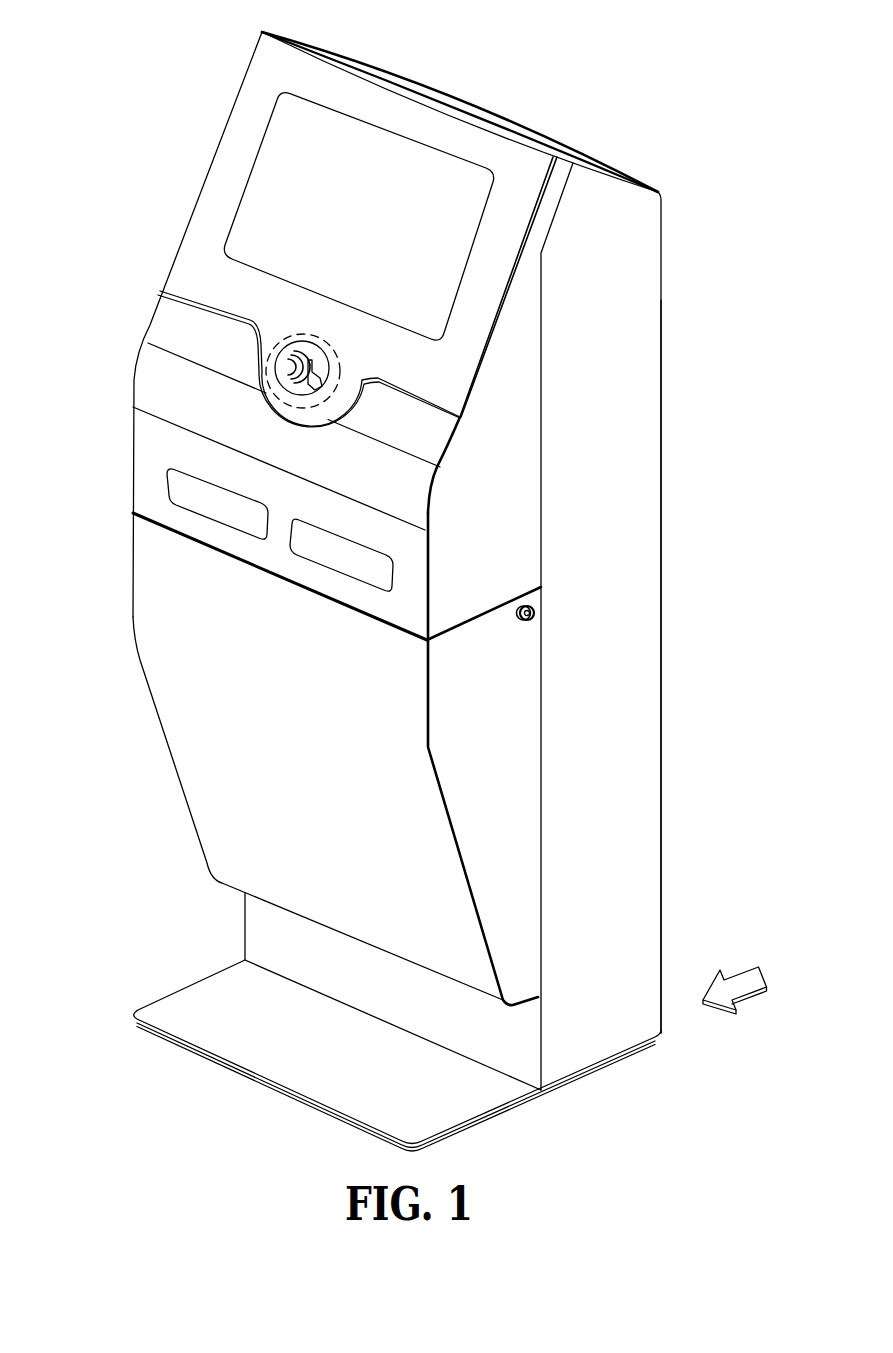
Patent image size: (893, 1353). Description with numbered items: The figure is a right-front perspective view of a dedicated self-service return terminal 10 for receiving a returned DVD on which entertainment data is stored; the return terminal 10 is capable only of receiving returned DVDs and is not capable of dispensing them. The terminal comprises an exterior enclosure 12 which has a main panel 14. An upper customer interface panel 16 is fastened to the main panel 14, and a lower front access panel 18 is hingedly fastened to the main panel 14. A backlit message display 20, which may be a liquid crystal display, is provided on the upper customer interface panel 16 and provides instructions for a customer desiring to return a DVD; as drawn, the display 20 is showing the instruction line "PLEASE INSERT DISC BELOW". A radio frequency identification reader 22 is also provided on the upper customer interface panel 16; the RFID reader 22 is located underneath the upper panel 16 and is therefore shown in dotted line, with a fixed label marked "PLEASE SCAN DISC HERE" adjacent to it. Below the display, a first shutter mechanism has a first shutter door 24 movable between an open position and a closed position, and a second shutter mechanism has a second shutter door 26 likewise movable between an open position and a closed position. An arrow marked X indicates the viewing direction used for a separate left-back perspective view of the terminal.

The dedicated self-service return terminal 10 is at (137, 128).
The exterior enclosure 12 is at (661, 185).
The main panel 14 is at (633, 328).
The upper customer interface panel 16 is at (505, 420).
The lower front access panel 18 is at (507, 698).
The backlit message display 20 is at (413, 155).
The radio frequency identification (RFID) reader 22 is at (247, 333).
The first shutter door 24 is at (203, 500).
The second shutter door 26 is at (347, 558).